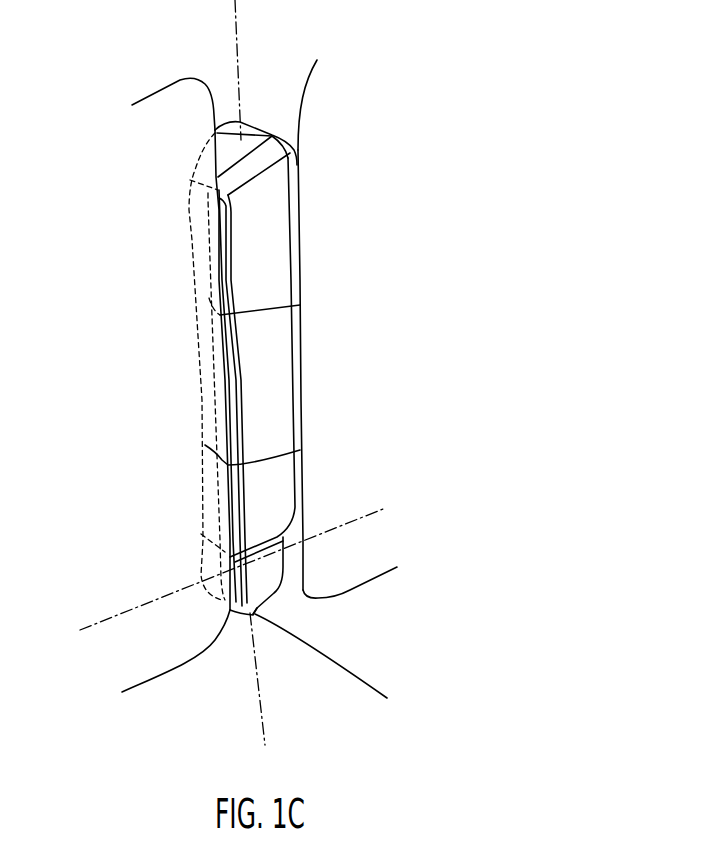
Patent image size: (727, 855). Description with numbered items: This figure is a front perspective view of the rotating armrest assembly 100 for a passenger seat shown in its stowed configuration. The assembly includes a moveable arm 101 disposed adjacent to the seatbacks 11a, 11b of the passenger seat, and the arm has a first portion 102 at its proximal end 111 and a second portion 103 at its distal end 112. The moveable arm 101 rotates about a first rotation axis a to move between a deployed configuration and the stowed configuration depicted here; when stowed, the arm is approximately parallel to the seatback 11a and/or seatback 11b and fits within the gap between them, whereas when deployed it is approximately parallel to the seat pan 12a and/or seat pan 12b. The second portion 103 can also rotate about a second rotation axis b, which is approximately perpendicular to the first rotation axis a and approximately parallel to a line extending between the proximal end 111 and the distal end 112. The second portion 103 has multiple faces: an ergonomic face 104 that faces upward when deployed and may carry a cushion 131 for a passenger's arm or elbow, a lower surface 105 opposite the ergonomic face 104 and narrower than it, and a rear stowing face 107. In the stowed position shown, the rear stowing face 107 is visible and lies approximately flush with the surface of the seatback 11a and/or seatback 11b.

The rotating armrest assembly 100 is at (482, 305).
The moveable arm 101 is at (282, 400).
The first portion 102 is at (222, 600).
The second portion 103 is at (277, 320).
The ergonomic face 104 is at (268, 133).
The lower surface 105 is at (205, 280).
The rear stowing face 107 is at (267, 285).
The proximal end 111 is at (213, 570).
The distal end 112 is at (260, 150).
The cushion 131 is at (300, 228).
The seatback 11a is at (103, 340).
The seatback 11b is at (407, 273).
The seat pan 12a is at (213, 727).
The seat pan 12b is at (420, 641).
The first rotation axis a is at (108, 617).
The second rotation axis b is at (263, 693).